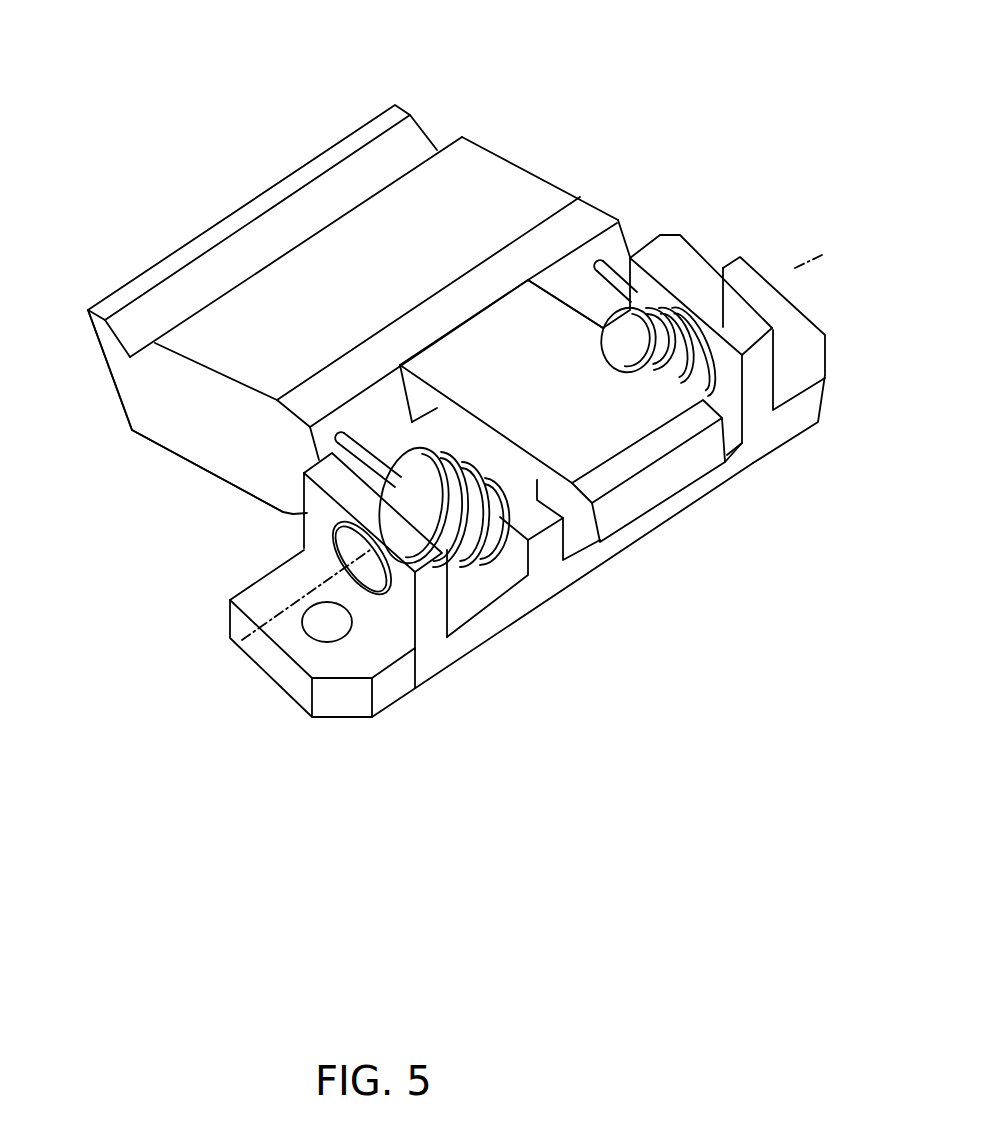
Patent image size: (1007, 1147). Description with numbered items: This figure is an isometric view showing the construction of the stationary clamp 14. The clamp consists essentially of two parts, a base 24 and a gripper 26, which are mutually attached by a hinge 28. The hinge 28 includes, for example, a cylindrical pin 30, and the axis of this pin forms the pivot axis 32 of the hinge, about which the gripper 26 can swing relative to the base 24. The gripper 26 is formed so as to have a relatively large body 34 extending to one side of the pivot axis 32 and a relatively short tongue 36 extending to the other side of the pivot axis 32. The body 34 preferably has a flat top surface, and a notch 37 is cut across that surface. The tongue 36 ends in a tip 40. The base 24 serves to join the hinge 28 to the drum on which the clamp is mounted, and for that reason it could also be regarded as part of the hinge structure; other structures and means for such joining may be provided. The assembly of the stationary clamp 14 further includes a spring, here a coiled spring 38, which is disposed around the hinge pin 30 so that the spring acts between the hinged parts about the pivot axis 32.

The stationary clamp 14 is at (694, 106).
The base 24 is at (512, 608).
The gripper 26 is at (233, 467).
The hinge 28 is at (435, 622).
The cylindrical pin 30 is at (365, 553).
The pivot axis 32 is at (795, 268).
The body 34 is at (127, 385).
The tongue 36 is at (562, 380).
The notch 37 is at (407, 153).
The coiled spring 38 is at (705, 370).
The tip 40 is at (657, 478).